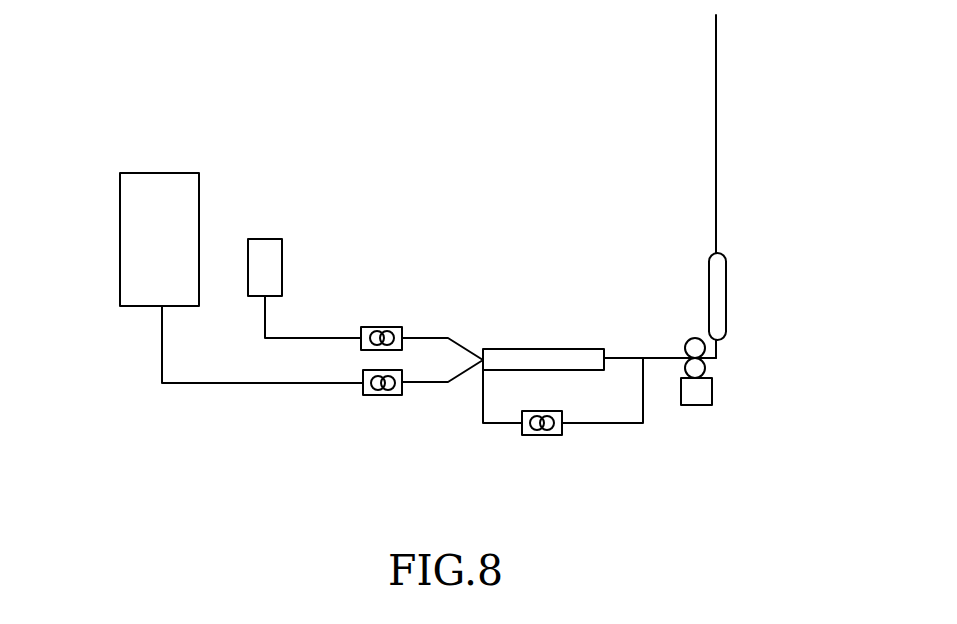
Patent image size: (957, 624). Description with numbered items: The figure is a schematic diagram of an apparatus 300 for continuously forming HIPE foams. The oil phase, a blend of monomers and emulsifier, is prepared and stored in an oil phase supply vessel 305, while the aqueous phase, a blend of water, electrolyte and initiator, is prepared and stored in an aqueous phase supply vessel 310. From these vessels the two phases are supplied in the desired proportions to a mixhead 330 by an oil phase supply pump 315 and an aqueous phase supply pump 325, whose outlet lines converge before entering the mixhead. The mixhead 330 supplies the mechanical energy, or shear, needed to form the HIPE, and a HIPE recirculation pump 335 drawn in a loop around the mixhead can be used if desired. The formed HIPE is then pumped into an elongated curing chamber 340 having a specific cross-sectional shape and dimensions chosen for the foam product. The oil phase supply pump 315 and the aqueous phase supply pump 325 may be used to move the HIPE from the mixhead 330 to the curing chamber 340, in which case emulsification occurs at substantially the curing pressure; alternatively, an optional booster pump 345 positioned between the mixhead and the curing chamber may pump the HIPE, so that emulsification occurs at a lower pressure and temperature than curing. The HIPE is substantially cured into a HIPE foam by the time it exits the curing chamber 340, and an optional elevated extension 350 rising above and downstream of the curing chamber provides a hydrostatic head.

The apparatus 300 is at (520, 186).
The oil phase supply vessel 305 is at (262, 239).
The aqueous phase supply vessel 310 is at (147, 173).
The oil phase supply pump 315 is at (385, 327).
The aqueous phase supply pump 325 is at (388, 395).
The mixhead 330 is at (508, 349).
The HIPE recirculation pump 335 is at (548, 435).
The curing chamber 340 is at (727, 300).
The booster pump 345 is at (695, 405).
The elevated extension 350 is at (716, 108).